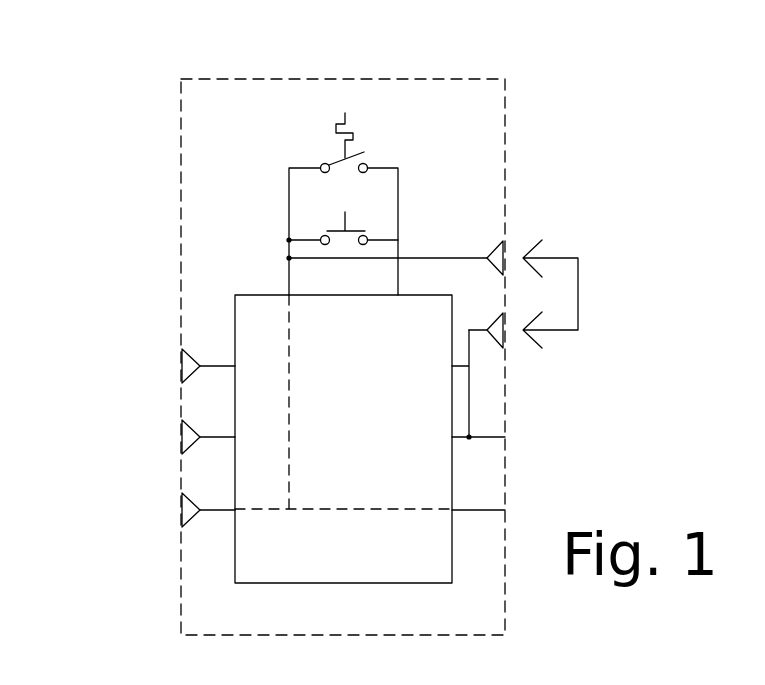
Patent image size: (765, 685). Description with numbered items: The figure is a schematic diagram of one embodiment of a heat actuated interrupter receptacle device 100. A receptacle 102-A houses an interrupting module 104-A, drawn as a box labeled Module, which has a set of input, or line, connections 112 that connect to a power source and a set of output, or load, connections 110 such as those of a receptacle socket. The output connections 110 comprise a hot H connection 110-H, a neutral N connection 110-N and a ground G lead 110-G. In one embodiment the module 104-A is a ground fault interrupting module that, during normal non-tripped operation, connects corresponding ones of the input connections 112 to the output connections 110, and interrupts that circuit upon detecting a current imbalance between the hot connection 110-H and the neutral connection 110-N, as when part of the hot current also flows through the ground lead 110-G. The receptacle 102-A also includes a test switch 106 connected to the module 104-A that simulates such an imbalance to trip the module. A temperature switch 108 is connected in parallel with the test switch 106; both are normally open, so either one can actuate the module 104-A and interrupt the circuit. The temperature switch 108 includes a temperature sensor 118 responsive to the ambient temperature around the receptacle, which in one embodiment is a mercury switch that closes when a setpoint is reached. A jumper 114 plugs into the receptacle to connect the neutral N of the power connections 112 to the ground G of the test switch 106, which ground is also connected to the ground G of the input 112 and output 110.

The heat actuated interrupter receptacle device 100 is at (108, 78).
The receptacle 102-A is at (505, 122).
The interrupting module 104-A is at (404, 369).
The test switch 106 is at (348, 222).
The temperature switch 108 is at (375, 163).
The output connections 110 is at (162, 393).
The hot connection 110-H is at (188, 374).
The neutral connection 110-N is at (188, 447).
The ground lead 110-G is at (188, 519).
The input connections 112 is at (487, 508).
The jumper 114 is at (578, 290).
The temperature sensor 118 is at (336, 124).